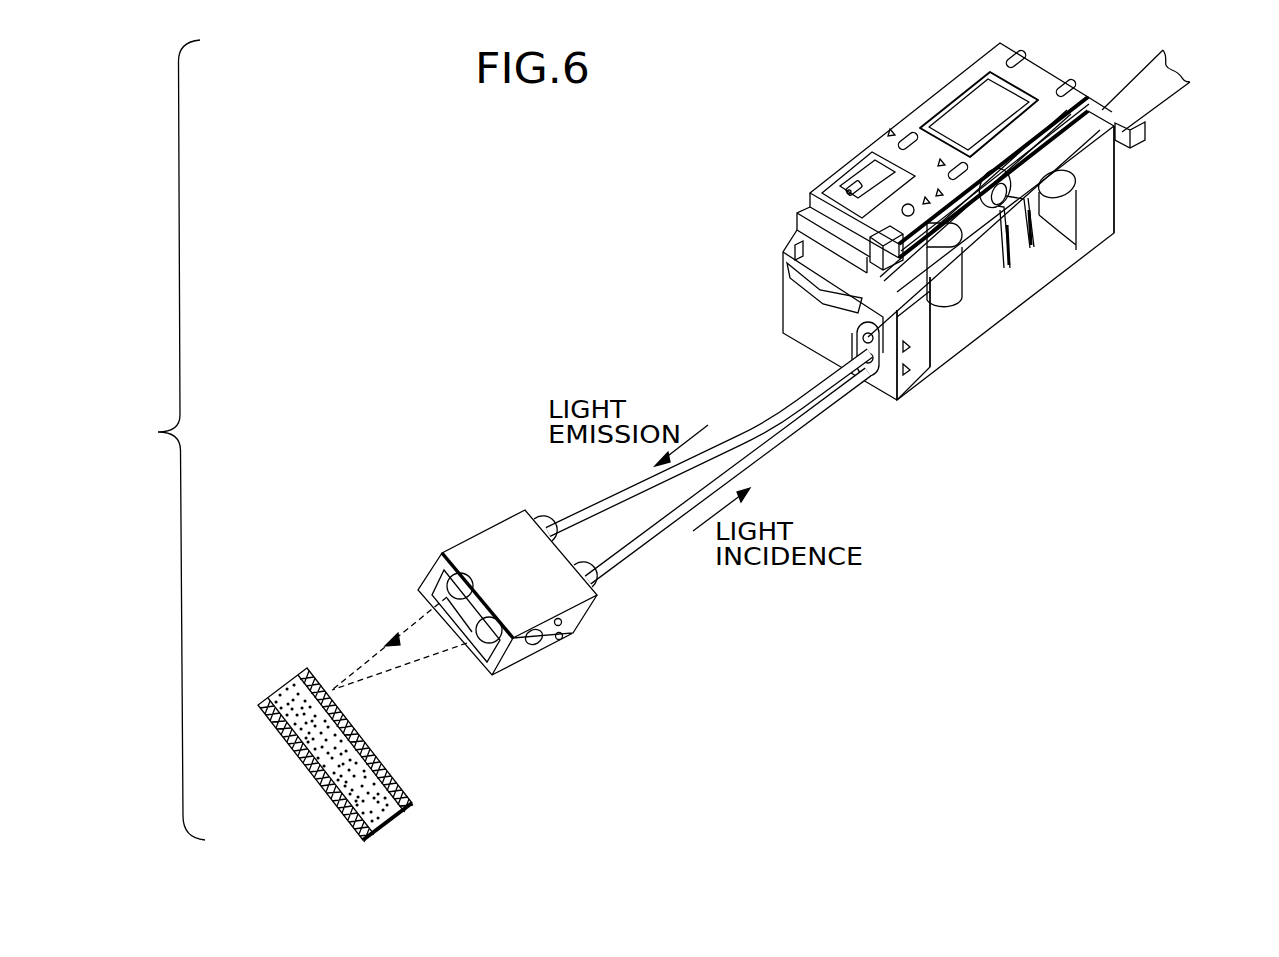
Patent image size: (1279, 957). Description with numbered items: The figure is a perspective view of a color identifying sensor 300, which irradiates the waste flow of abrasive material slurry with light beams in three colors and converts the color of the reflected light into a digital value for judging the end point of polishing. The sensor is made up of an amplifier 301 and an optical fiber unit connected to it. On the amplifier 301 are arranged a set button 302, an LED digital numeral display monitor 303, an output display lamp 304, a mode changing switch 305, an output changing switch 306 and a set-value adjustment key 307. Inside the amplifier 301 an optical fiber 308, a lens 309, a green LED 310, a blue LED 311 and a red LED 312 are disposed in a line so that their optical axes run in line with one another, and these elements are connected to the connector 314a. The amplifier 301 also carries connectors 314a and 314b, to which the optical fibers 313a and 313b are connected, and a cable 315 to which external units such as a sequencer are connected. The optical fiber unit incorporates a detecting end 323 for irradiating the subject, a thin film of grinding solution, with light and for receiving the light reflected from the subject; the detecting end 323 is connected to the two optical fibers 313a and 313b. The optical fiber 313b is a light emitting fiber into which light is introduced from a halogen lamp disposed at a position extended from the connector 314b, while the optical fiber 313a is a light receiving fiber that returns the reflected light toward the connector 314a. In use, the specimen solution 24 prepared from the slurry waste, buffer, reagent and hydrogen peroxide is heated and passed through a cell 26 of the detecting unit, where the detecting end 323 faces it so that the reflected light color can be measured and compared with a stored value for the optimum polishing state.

The specimen solution 24 is at (300, 690).
The cell 26 is at (398, 785).
The color identifying sensor 300 is at (640, 199).
The amplifier 301 is at (903, 85).
The set button 302 is at (1073, 86).
The LED digital numeral display monitor 303 is at (983, 97).
The output display lamp 304 is at (902, 208).
The mode changing switch 305 is at (1025, 57).
The output changing switch 306 is at (1118, 172).
The set-value adjustment key 307 is at (903, 132).
The optical fiber 308 is at (925, 318).
The lens 309 is at (945, 280).
The green LED 310 is at (962, 240).
The blue LED 311 is at (1003, 208).
The red LED 312 is at (1047, 200).
The optical fiber 313a is at (770, 396).
The optical fiber 313b is at (822, 398).
The connector 314a is at (867, 336).
The connector 314b is at (878, 362).
The cable 315 is at (1172, 60).
The detecting end 323 is at (490, 522).